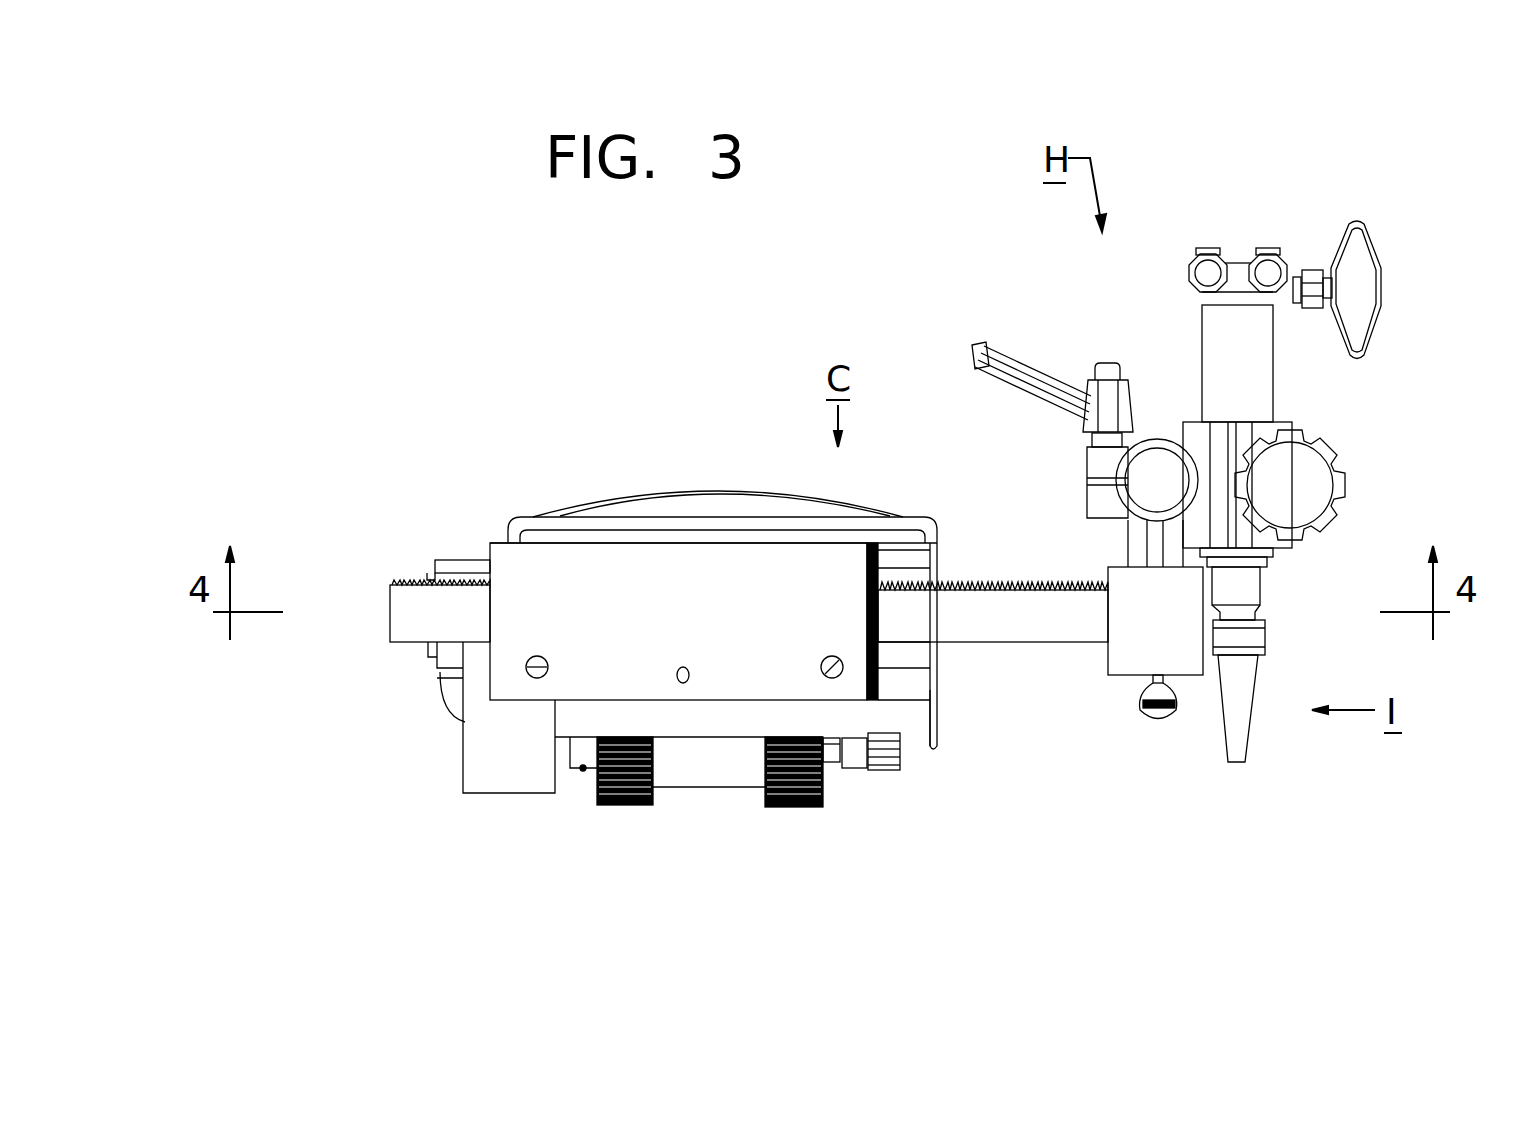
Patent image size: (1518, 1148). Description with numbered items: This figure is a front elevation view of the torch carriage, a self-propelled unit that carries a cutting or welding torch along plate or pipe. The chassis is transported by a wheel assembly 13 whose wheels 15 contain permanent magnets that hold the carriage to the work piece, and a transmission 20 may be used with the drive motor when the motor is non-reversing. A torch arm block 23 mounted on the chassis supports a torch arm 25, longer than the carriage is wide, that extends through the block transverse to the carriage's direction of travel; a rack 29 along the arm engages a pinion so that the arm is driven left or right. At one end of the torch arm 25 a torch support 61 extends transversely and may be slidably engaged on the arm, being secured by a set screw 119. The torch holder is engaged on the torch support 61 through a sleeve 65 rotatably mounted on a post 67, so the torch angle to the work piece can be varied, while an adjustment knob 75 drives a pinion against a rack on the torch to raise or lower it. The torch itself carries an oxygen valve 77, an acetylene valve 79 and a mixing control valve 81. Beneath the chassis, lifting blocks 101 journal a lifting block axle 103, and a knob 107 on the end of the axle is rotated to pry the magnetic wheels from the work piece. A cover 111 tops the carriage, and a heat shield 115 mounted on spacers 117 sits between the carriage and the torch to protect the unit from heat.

The wheel assembly 13 is at (689, 837).
The front wheels 15 is at (679, 807).
The transmission 20 is at (482, 759).
The torch arm block 23 is at (673, 584).
The torch arm 25 is at (389, 641).
The rack 29 is at (993, 552).
The torch support 61 is at (1106, 590).
The sleeve 65 is at (1052, 430).
The post 67 is at (1136, 410).
The adjustment knob 75 is at (1336, 462).
The oxygen valve 77 is at (1268, 186).
The acetylene valve 79 is at (1315, 213).
The mixing control valve 81 is at (1399, 247).
The lifting blocks 101 is at (960, 814).
The lifting block axle 103 is at (950, 838).
The knob 107 is at (973, 790).
The cover 111 is at (722, 468).
The heat shield 115 is at (1004, 651).
The spacers 117 is at (996, 745).
The set screw 119 is at (1226, 752).